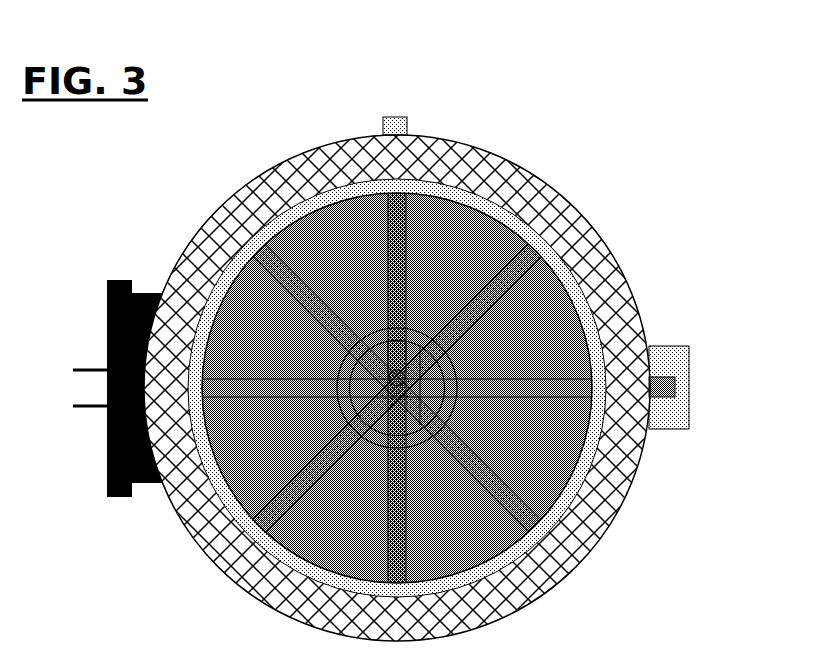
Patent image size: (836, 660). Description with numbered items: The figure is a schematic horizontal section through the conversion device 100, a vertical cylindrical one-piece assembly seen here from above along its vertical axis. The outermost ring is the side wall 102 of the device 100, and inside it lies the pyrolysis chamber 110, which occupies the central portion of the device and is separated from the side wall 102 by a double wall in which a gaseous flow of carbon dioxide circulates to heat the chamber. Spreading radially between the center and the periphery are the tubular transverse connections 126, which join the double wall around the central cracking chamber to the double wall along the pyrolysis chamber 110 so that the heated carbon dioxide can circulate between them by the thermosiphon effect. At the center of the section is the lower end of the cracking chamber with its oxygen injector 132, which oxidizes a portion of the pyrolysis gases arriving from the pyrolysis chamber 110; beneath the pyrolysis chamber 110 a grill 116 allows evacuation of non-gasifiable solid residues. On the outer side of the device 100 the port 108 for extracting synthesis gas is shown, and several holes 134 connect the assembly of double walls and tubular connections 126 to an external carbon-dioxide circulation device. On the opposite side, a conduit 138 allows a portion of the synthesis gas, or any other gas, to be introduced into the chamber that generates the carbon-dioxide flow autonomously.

The conversion device 100 is at (388, 376).
The side wall 102 is at (586, 226).
The port 108 is at (702, 382).
The pyrolysis chamber 110 is at (333, 253).
The grill 116 is at (446, 375).
The tubular transverse connections 126 is at (460, 315).
The oxygen injector 132 is at (388, 378).
The holes 134 is at (410, 124).
The conduit 138 is at (82, 370).